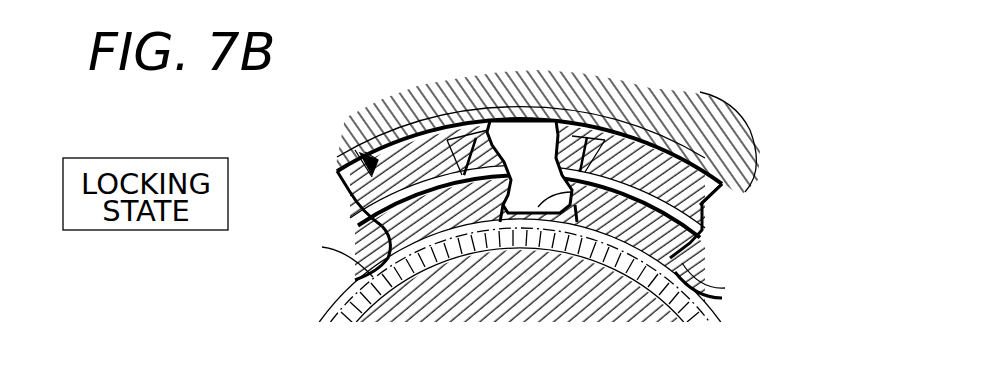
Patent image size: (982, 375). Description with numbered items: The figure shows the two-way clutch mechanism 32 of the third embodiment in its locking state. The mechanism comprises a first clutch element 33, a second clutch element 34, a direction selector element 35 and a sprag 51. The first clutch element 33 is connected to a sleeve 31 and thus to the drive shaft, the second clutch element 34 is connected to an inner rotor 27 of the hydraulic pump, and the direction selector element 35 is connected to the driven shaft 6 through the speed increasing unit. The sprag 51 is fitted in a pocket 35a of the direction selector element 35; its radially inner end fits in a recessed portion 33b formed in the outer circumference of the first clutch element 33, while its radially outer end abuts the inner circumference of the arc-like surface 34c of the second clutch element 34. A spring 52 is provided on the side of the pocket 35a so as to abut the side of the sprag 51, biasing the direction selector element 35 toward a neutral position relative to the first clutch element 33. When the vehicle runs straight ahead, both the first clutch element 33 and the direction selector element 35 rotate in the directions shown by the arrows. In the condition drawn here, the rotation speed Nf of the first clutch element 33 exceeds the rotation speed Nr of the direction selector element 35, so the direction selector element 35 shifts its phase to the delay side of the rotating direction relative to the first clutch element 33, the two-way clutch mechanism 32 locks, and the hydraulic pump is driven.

The driven shaft 6 is at (514, 302).
The inner rotor 27 is at (611, 100).
The sleeve 31 is at (322, 252).
The two-way clutch mechanism 32 is at (766, 192).
The first clutch element 33 is at (440, 243).
The recessed portion 33b is at (543, 207).
The second clutch element 34 is at (343, 161).
The arc-like surface 34c is at (366, 152).
The direction selector element 35 is at (660, 150).
The pocket 35a is at (476, 133).
The sprag 51 is at (513, 164).
The spring 52 is at (573, 172).
The rotation speed of the direction selector element Nr is at (718, 222).
The rotation speed of the first clutch element Nf is at (686, 262).